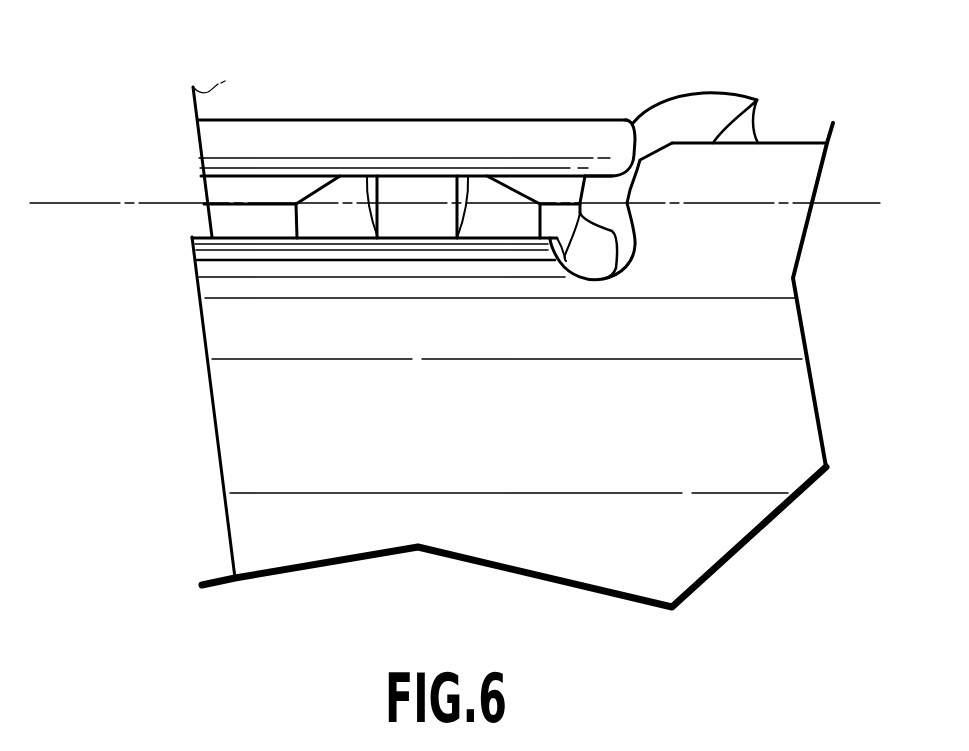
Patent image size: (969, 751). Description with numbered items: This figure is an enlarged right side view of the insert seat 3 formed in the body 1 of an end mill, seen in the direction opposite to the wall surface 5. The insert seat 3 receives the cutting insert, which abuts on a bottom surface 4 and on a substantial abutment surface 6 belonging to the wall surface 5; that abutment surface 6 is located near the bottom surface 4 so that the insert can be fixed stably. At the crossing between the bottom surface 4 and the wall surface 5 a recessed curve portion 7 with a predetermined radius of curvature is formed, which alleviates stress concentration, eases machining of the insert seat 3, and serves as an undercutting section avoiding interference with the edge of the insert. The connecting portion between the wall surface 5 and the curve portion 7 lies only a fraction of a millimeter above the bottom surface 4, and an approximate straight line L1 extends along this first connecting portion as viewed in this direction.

The body 1 is at (295, 425).
The insert seat 3 is at (348, 220).
The bottom surface 4 is at (417, 236).
The wall surface 5 is at (236, 188).
The abutment surface 6 is at (268, 188).
The curve portion 7 is at (223, 222).
The approximate straight line L1 is at (85, 202).